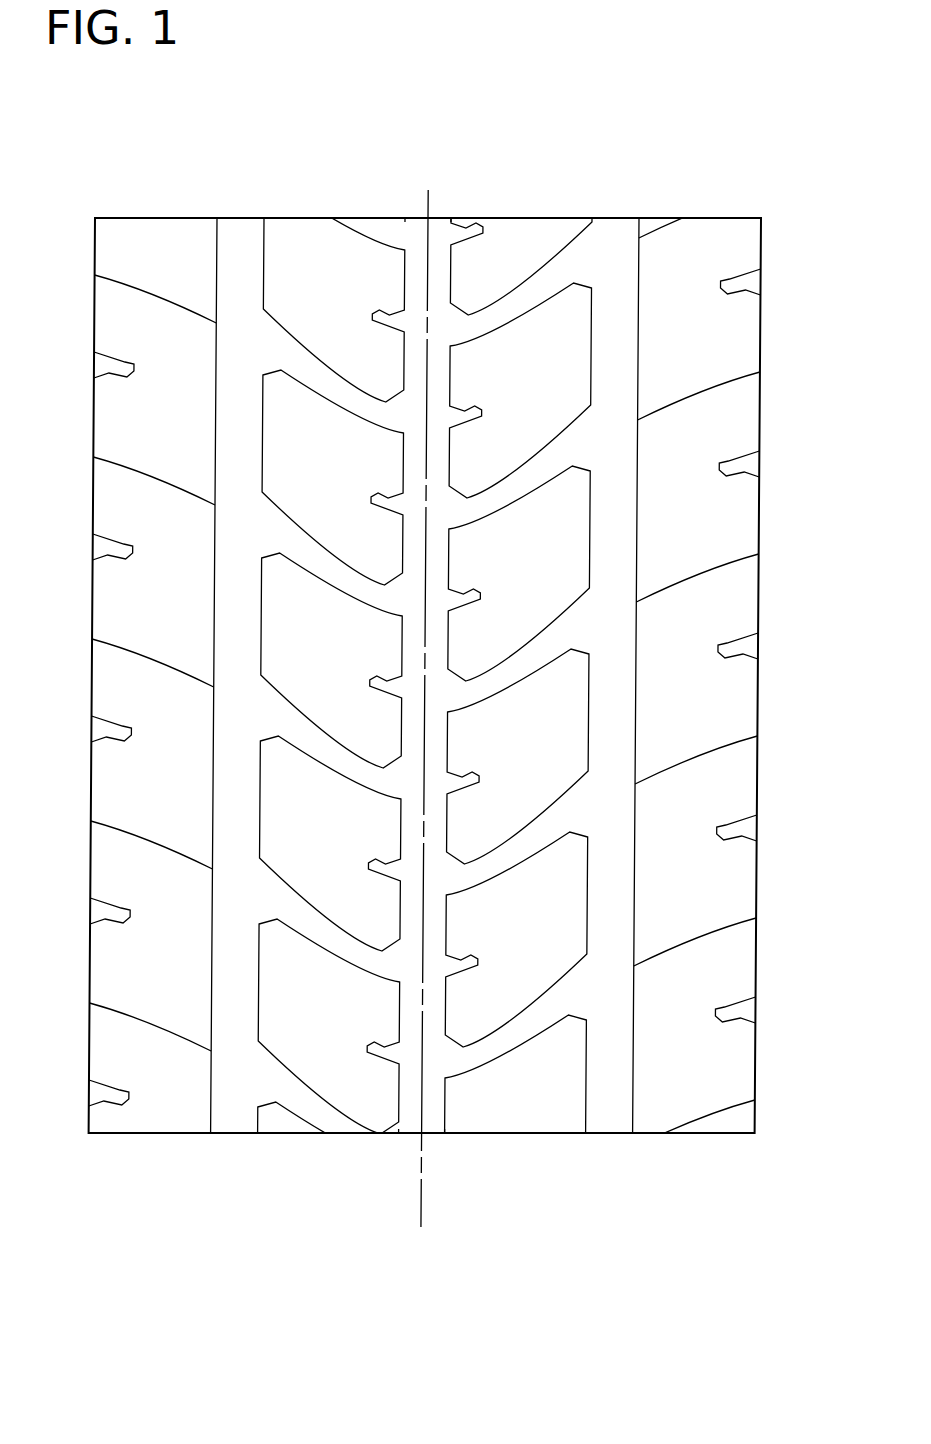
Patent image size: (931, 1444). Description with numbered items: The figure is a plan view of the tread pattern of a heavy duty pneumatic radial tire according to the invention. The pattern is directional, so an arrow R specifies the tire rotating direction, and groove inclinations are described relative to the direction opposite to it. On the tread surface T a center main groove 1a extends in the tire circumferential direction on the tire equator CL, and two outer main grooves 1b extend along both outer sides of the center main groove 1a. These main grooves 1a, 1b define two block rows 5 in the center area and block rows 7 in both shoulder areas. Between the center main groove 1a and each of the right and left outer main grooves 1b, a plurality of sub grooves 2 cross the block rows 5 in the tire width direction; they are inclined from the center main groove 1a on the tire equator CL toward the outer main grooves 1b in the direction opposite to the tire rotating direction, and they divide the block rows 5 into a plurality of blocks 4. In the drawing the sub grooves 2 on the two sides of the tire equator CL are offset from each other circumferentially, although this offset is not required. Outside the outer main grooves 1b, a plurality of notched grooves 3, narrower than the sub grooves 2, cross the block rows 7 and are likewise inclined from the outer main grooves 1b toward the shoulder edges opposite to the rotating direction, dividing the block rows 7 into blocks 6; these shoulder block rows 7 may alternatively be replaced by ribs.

The tread surface T is at (776, 318).
The tire equator CL is at (422, 729).
The center main groove 1a is at (435, 1123).
The outer main grooves 1b is at (238, 1120).
The sub grooves 2 is at (332, 940).
The notched grooves 3 is at (180, 1045).
The blocks 4 is at (497, 245).
The block rows 5 is at (333, 207).
The blocks 6 is at (205, 238).
The block rows 7 is at (152, 207).
The tire rotating direction R is at (792, 673).